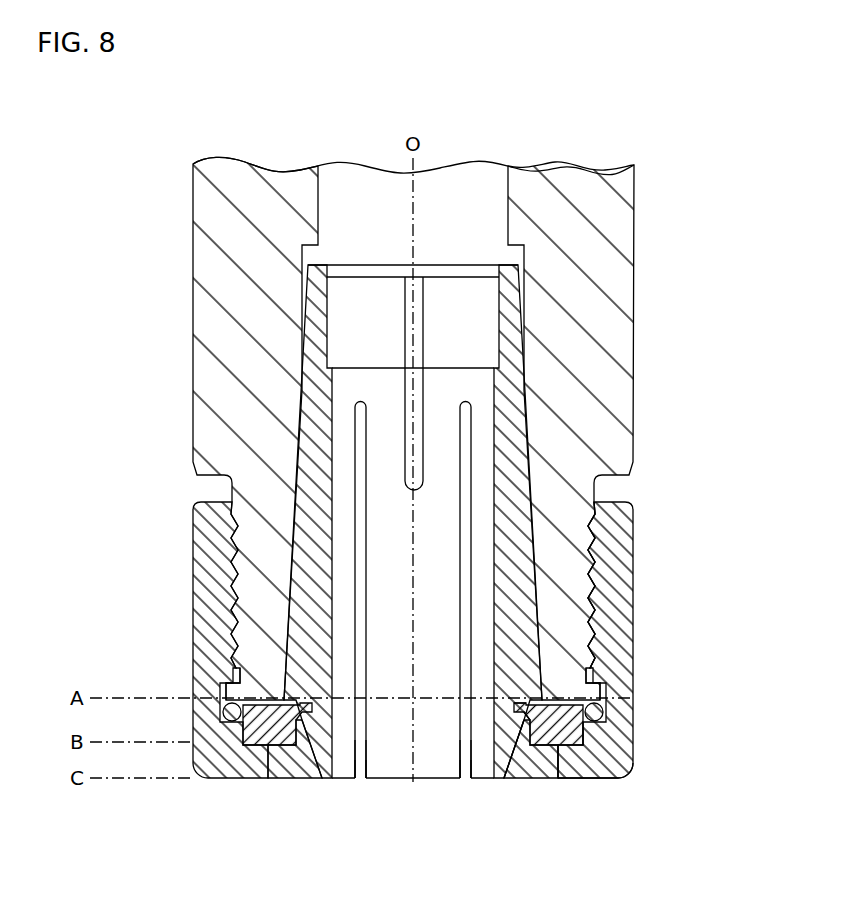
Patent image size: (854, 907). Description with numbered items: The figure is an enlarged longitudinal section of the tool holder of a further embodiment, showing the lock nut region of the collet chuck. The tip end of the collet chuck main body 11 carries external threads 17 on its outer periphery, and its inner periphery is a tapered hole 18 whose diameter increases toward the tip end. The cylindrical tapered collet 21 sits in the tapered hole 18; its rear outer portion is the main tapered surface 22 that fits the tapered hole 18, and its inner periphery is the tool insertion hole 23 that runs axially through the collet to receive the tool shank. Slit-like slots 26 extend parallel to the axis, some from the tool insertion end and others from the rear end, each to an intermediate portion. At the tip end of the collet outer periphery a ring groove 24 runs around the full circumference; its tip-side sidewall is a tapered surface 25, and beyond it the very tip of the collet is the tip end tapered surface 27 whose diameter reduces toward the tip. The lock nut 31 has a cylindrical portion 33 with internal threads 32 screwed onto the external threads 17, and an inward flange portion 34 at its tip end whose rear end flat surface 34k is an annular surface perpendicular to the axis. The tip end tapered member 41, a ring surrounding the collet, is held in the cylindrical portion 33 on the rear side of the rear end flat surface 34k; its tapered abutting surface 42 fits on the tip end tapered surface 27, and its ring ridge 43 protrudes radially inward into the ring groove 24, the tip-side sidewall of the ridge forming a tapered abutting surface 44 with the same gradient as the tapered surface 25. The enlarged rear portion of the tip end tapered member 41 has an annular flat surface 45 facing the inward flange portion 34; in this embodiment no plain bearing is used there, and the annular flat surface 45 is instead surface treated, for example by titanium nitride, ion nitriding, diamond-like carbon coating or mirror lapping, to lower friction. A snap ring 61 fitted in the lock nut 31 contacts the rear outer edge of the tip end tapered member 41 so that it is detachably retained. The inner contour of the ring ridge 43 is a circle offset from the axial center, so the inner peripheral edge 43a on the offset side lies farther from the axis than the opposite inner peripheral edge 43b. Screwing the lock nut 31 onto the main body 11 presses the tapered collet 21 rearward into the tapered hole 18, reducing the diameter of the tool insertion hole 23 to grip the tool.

The collet chuck main body 11 is at (649, 263).
The tapered collet 21 is at (531, 391).
The main tapered surface 22 is at (522, 410).
The tool insertion hole 23 is at (497, 445).
The slots 26 is at (413, 316).
The tapered hole 18 is at (466, 463).
The external threads 17 is at (592, 545).
The internal threads 32 is at (588, 597).
The cylindrical portion 33 is at (615, 637).
The ring groove 24 is at (583, 693).
The snap ring 61 is at (602, 718).
The tapered surface 25 is at (602, 735).
The rear end flat surface 34k is at (618, 753).
The lock nut 31 is at (634, 776).
The inward flange portion 34 is at (563, 770).
The annular flat surface 45 is at (583, 768).
The tip end tapered surface 27 is at (530, 770).
The tip end tapered member 41 is at (519, 788).
The tapered abutting surface 42 is at (522, 732).
The tapered abutting surface 44 is at (517, 722).
The ring ridge 43 is at (384, 785).
The inner peripheral edge 43a is at (339, 779).
The inner peripheral edge 43b is at (457, 779).